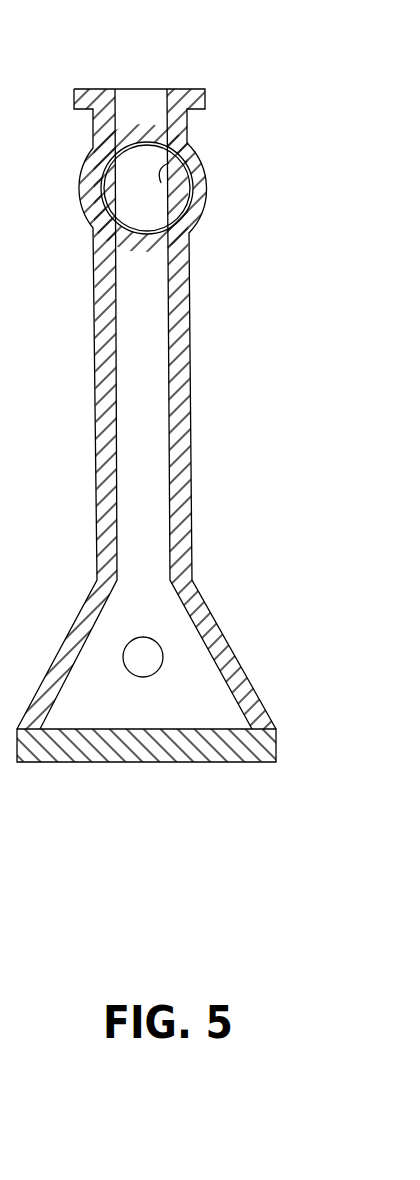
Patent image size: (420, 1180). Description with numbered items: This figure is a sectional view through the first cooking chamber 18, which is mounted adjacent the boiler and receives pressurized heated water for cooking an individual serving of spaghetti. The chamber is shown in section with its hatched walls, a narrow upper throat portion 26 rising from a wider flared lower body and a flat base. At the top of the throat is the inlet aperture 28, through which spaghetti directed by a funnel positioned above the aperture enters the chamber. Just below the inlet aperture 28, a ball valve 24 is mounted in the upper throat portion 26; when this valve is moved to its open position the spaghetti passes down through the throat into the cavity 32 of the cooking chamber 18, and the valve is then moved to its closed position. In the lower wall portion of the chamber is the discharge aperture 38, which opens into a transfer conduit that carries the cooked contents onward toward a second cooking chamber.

The first cooking chamber 18 is at (188, 338).
The ball valve 24 is at (193, 157).
The upper throat portion 26 is at (146, 117).
The inlet aperture 28 is at (132, 99).
The cavity 32 is at (157, 447).
The discharge aperture 38 is at (135, 657).